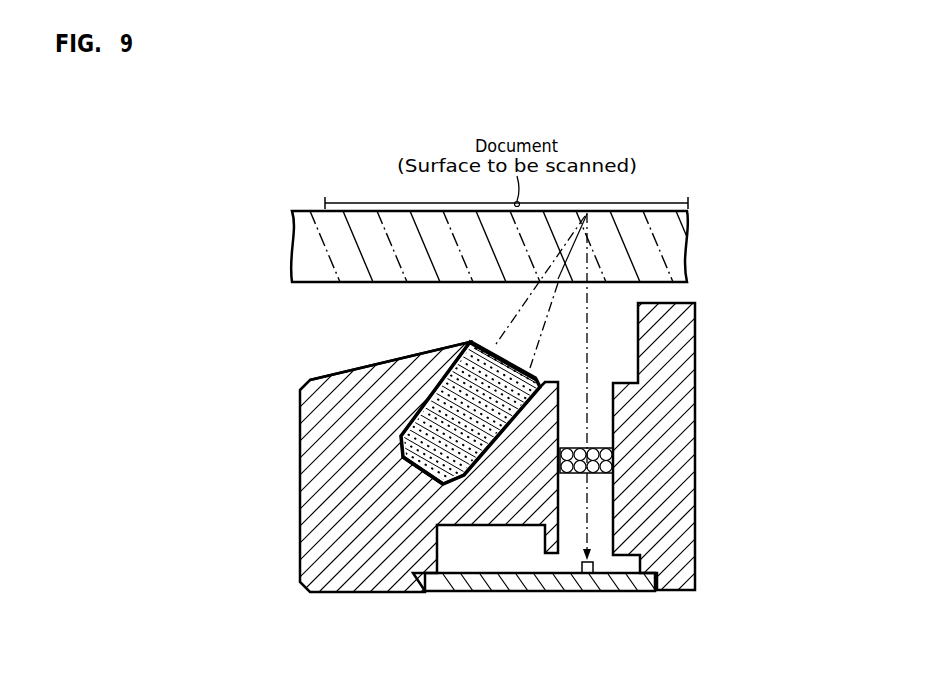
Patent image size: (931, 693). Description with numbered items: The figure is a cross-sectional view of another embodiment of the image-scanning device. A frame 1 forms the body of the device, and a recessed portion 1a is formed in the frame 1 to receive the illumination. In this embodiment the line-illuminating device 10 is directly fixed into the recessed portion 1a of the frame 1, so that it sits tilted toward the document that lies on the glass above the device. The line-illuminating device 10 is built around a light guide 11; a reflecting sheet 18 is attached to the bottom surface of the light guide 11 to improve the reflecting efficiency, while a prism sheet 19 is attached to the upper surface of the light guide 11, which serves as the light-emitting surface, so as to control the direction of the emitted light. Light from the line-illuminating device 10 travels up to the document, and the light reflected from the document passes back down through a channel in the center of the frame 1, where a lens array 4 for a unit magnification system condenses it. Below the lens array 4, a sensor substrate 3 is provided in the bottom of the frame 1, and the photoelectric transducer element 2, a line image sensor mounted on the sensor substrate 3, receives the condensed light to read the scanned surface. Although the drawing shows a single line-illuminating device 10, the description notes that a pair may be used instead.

The frame 1 is at (680, 402).
The recessed portion 1a is at (442, 402).
The photoelectric transducer element 2 is at (597, 573).
The sensor substrate 3 is at (537, 580).
The lens array 4 is at (598, 447).
The line-illuminating device 10 is at (419, 339).
The light guide 11 is at (470, 375).
The reflecting sheet 18 is at (422, 482).
The prism sheet 19 is at (513, 355).